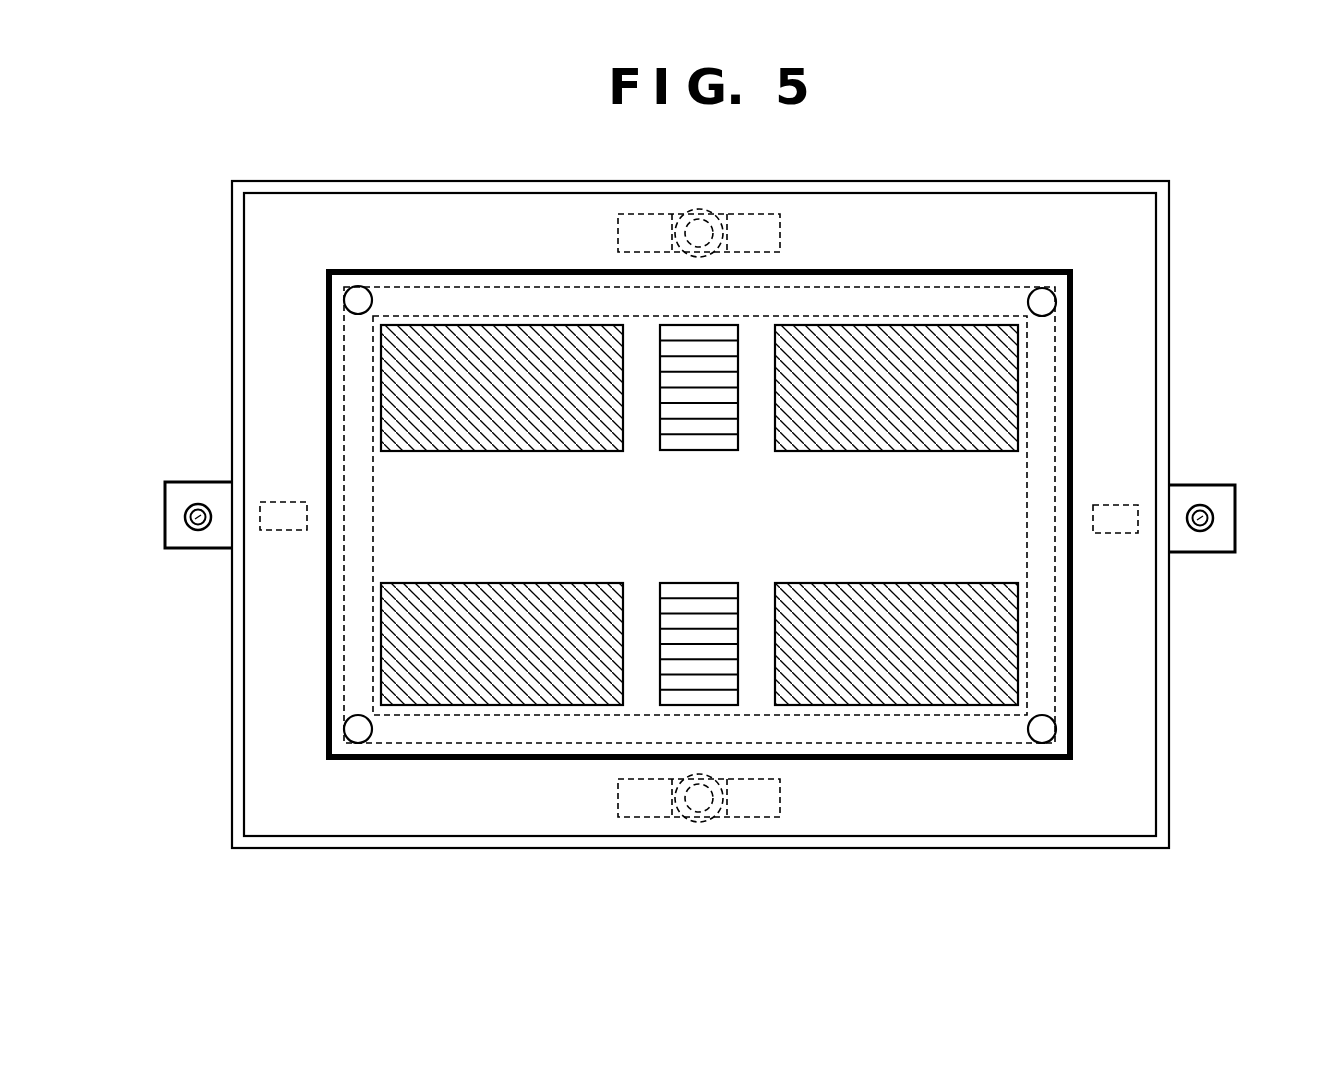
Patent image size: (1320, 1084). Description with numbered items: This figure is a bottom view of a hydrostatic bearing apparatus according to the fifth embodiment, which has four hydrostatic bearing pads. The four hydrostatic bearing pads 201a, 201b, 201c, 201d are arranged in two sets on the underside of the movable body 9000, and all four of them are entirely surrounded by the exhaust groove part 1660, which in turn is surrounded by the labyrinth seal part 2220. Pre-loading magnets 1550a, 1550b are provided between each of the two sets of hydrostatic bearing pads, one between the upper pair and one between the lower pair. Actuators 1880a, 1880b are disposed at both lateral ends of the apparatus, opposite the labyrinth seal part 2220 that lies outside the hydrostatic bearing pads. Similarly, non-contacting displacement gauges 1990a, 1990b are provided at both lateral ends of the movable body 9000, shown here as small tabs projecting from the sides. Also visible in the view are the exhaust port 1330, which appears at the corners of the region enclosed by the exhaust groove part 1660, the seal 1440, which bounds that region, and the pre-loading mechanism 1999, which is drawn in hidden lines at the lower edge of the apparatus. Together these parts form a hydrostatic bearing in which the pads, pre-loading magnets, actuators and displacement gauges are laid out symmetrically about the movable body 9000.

The movable body 9000 is at (232, 263).
The labyrinth seal part 2220 is at (1122, 315).
The exhaust groove part 1660 is at (418, 297).
The seal 1440 is at (943, 272).
The exhaust port 1330 is at (1040, 303).
The hydrostatic bearing pad 201a is at (848, 355).
The hydrostatic bearing pad 201b is at (518, 355).
The hydrostatic bearing pad 201c is at (483, 677).
The hydrostatic bearing pad 201d is at (920, 677).
The pre-loading magnet 1550a is at (666, 352).
The pre-loading magnet 1550b is at (668, 693).
The actuator 1880a is at (1122, 513).
The actuator 1880b is at (273, 510).
The non-contacting displacement gauge 1990a is at (1200, 521).
The non-contacting displacement gauge 1990b is at (198, 520).
The pre-loading mechanism 1999 is at (758, 795).